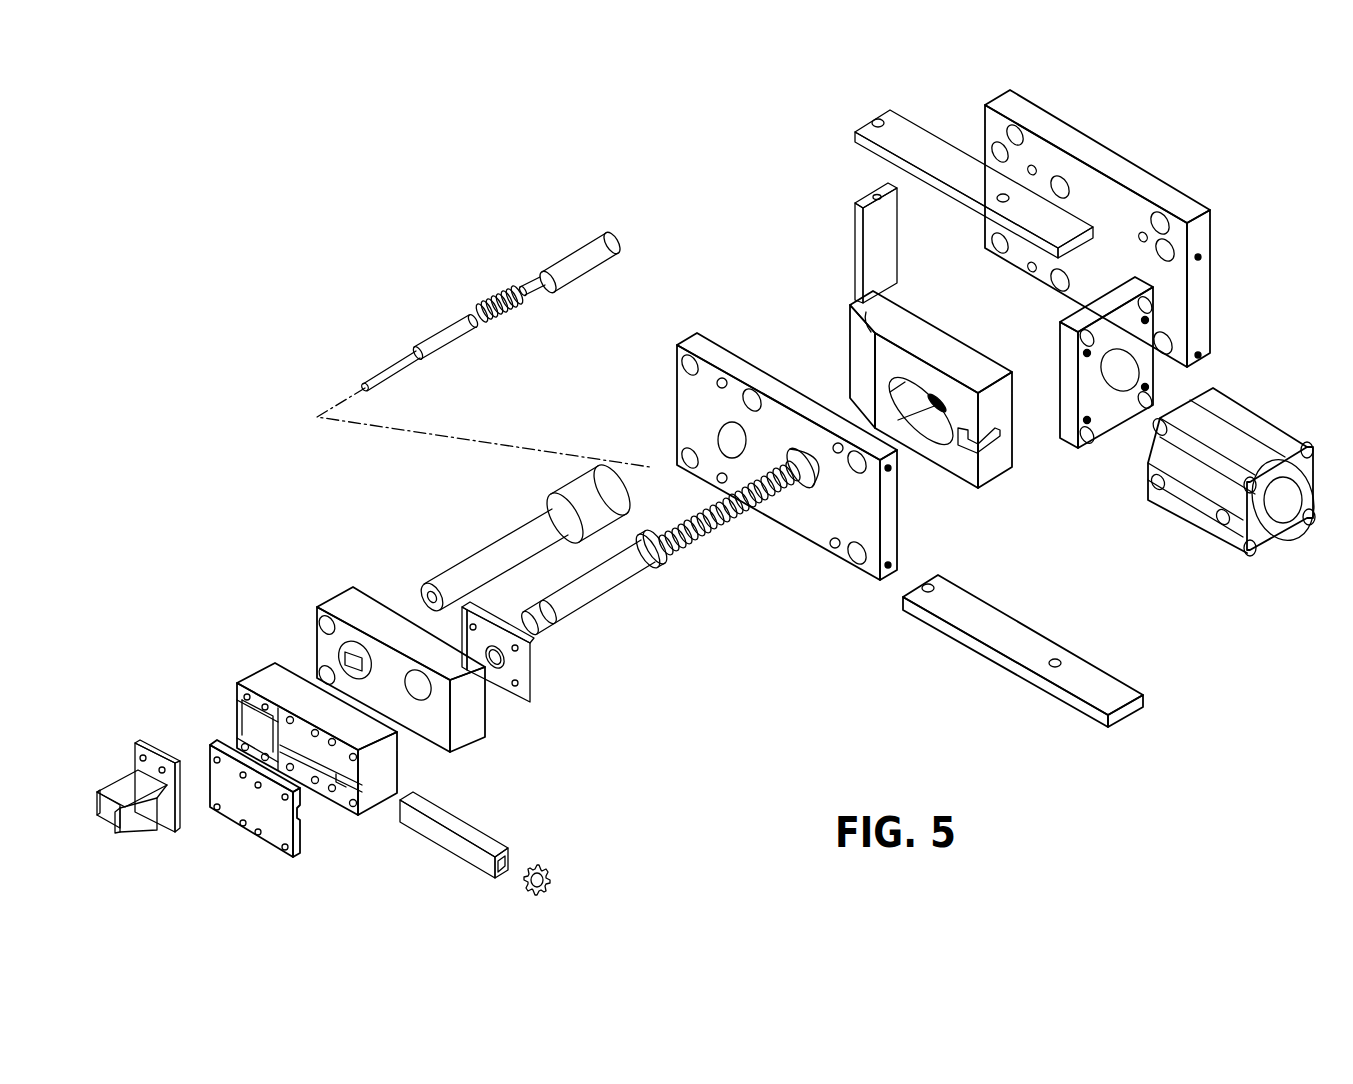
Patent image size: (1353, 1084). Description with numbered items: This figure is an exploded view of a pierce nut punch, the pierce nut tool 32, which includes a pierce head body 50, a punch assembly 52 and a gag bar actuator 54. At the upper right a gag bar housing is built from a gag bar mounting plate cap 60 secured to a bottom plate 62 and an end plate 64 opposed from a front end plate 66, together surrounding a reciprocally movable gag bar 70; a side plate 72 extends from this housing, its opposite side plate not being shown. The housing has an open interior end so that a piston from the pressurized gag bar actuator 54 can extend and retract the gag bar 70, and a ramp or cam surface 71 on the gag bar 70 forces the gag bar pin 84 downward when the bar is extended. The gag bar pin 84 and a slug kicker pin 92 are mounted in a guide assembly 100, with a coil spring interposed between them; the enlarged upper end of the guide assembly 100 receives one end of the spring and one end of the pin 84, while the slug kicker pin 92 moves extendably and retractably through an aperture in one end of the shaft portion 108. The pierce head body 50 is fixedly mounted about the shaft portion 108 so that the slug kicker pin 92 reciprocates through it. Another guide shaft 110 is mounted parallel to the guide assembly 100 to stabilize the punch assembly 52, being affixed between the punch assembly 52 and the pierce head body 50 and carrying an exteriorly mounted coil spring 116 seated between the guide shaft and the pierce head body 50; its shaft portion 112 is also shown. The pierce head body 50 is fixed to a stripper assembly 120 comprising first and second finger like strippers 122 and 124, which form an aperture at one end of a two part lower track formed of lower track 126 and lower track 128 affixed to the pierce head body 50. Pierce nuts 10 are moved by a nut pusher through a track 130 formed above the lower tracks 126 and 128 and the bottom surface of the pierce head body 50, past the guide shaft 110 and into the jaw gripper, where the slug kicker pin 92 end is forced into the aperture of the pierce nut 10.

The pierce nut 10 is at (550, 867).
The pierce nut tool 32 is at (705, 252).
The pierce head body 50 is at (262, 667).
The punch assembly 52 is at (370, 590).
The gag bar actuator 54 is at (1197, 503).
The gag bar mounting plate cap 60 is at (1115, 165).
The bottom plate 62 is at (690, 390).
The end plate 64 is at (1071, 437).
The front end plate 66 is at (855, 242).
The gag bar 70 is at (950, 345).
The ramp or cam surface 71 is at (870, 352).
The side plate 72 is at (953, 612).
The gag bar pin 84 is at (578, 254).
The slug kicker pin 92 is at (447, 333).
The guide assembly 100 is at (518, 492).
The shaft portion 108 is at (490, 548).
The guide shaft 110 is at (665, 562).
The bolt shaft 112 is at (625, 583).
The coil spring 116 is at (690, 542).
The stripper assembly 120 is at (150, 695).
The first finger like stripper 122 is at (106, 782).
The second finger like stripper 124 is at (148, 820).
The lower track 126 is at (237, 800).
The lower track 128 is at (274, 830).
The track 130 is at (465, 822).